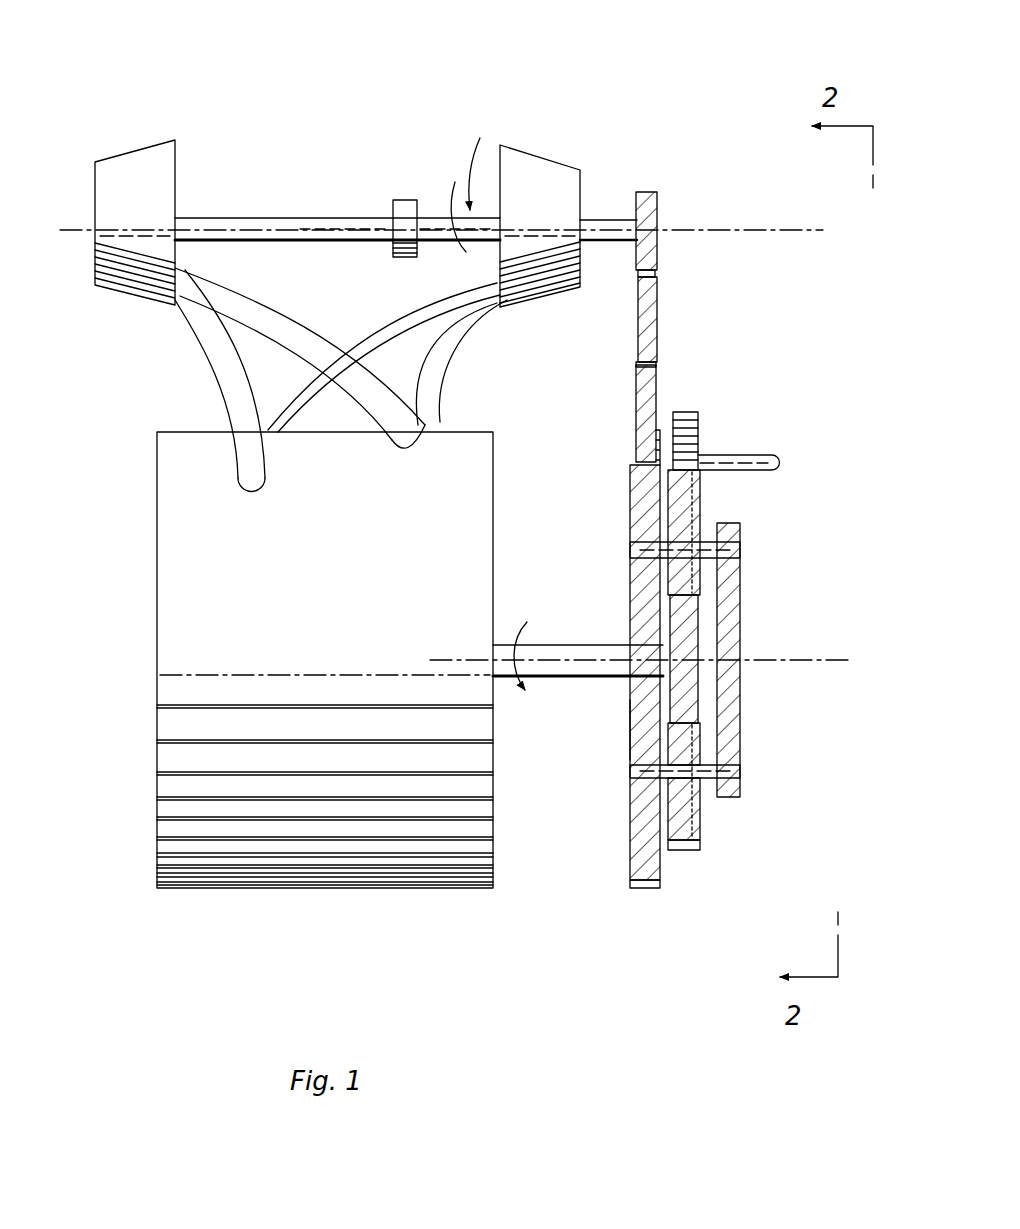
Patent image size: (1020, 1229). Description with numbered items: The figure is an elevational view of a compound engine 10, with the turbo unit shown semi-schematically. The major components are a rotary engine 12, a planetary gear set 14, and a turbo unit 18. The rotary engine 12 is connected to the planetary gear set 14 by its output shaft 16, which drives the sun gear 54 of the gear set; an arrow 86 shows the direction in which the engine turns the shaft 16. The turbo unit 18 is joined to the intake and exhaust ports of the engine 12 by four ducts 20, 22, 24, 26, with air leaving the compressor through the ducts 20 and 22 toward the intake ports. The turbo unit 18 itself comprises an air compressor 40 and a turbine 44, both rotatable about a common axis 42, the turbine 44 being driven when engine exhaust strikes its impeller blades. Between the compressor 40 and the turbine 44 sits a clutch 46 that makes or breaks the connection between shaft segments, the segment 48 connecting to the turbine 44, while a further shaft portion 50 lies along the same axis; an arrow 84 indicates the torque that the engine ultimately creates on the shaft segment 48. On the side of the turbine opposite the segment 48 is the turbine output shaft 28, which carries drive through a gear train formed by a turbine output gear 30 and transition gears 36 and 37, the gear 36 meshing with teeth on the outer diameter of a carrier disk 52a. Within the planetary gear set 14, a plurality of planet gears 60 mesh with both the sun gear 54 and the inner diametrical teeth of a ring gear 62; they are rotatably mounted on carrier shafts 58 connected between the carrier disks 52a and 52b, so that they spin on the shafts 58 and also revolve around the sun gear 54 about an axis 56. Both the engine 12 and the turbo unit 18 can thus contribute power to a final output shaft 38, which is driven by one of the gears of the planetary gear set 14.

The compound engine 10 is at (260, 902).
The rotary engine 12 is at (500, 432).
The planetary gear set 14 is at (628, 742).
The output shaft 16 is at (573, 645).
The turbo unit 18 is at (256, 212).
The duct 20 is at (236, 386).
The duct 22 is at (273, 315).
The duct 24 is at (420, 302).
The duct 26 is at (438, 357).
The turbine output shaft 28 is at (604, 224).
The turbine output gear 30 is at (652, 196).
The transition gear 36 is at (655, 380).
The transition gear 37 is at (655, 312).
The final output shaft 38 is at (770, 455).
The air compressor 40 is at (160, 155).
The axis 42 is at (758, 232).
The turbine 44 is at (568, 168).
The clutch 46 is at (400, 198).
The shaft segment 48 is at (428, 226).
The shaft portion 50 is at (340, 222).
The planet carrier disk 52a is at (640, 510).
The planet carrier disk 52b is at (740, 525).
The sun gear 54 is at (690, 618).
The axis 56 is at (790, 663).
The carrier shaft 58 is at (740, 548).
The planet gear 60 is at (700, 576).
The ring gear 62 is at (690, 850).
The arrow 84 is at (468, 180).
The arrow 86 is at (520, 690).